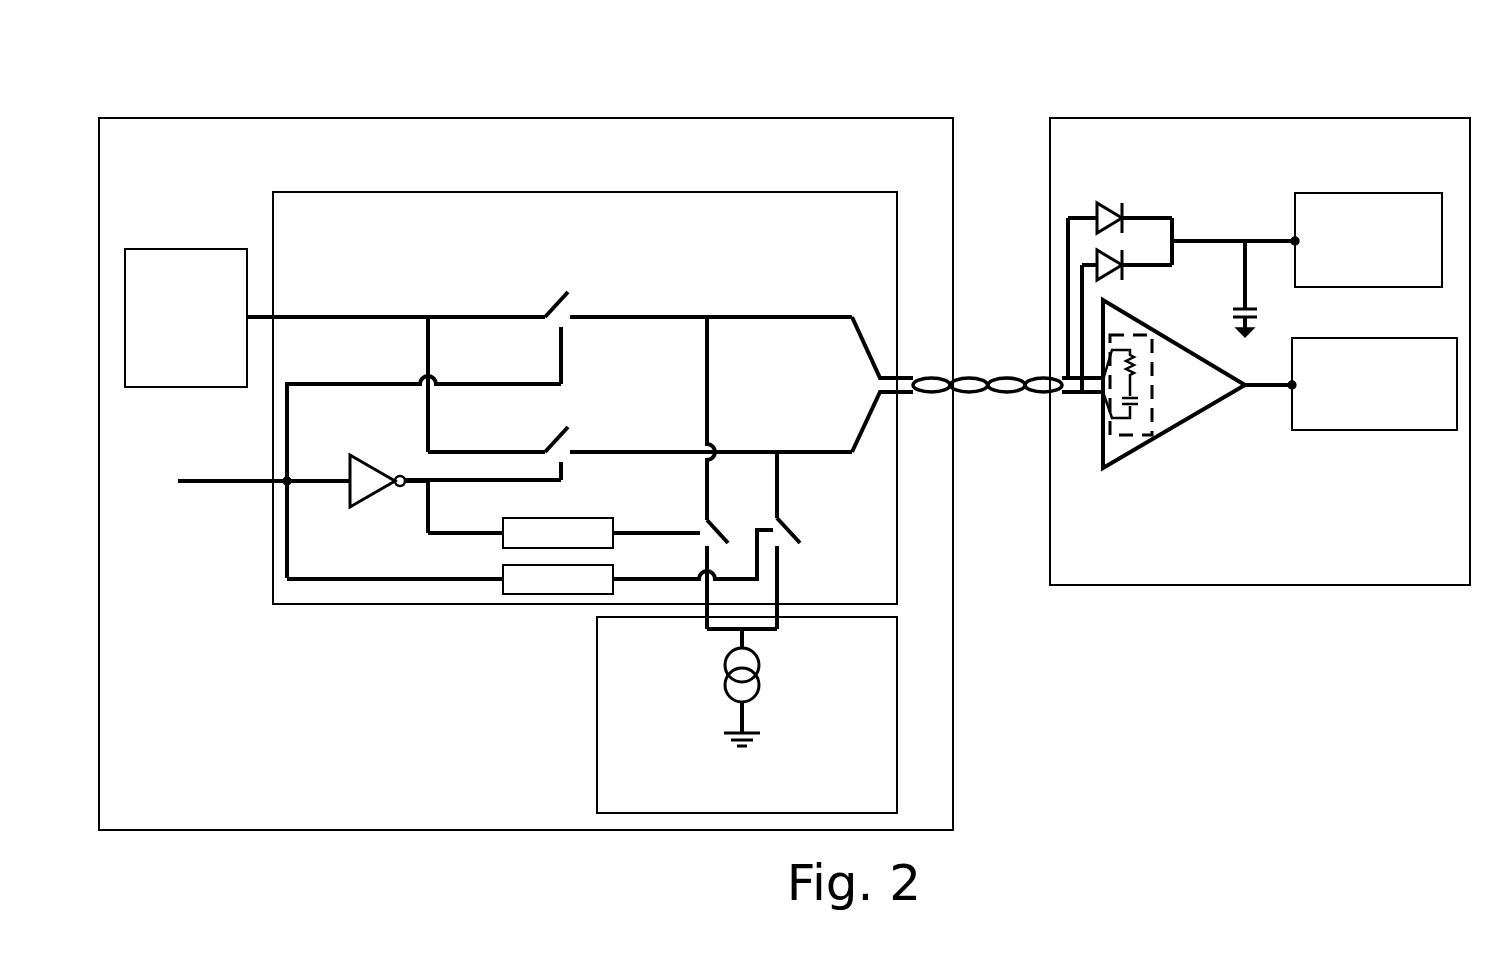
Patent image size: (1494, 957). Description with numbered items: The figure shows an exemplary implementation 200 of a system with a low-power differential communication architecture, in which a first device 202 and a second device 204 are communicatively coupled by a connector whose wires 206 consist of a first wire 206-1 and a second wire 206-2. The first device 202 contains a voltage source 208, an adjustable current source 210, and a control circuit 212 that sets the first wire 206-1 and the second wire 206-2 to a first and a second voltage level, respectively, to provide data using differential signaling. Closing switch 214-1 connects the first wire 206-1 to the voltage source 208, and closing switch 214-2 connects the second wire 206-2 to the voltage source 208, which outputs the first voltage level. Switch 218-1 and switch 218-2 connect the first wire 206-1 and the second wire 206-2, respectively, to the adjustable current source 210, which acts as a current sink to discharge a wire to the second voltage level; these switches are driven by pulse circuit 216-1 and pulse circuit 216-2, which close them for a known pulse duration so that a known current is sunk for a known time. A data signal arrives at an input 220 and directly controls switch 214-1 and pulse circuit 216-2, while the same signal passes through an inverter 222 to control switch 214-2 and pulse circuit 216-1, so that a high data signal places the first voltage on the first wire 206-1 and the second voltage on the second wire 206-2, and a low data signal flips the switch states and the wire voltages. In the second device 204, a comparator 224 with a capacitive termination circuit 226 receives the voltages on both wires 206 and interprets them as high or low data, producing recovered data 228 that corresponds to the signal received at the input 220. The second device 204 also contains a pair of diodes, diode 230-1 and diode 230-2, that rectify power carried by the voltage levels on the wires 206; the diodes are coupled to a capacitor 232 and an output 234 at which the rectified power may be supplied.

The implementation 200 is at (255, 65).
The first device 202 is at (513, 802).
The second device 204 is at (1244, 568).
The wires 206 is at (1005, 392).
The first wire 206-1 is at (813, 316).
The second wire 206-2 is at (811, 444).
The voltage source 208 is at (172, 353).
The adjustable current source 210 is at (733, 806).
The control circuit 212 is at (571, 254).
The switch 214-1 is at (548, 312).
The switch 214-2 is at (558, 440).
The pulse circuit 216-1 is at (589, 518).
The pulse circuit 216-2 is at (525, 596).
The switch 218-1 is at (723, 530).
The switch 218-2 is at (799, 531).
The input 220 is at (237, 481).
The inverter 222 is at (367, 462).
The comparator 224 is at (1190, 405).
The capacitive termination circuit 226 is at (1143, 423).
The recovered data 228 is at (1368, 464).
The diode 230-1 is at (1106, 211).
The diode 230-2 is at (1107, 272).
The capacitor 232 is at (1260, 308).
The output 234 is at (1363, 171).